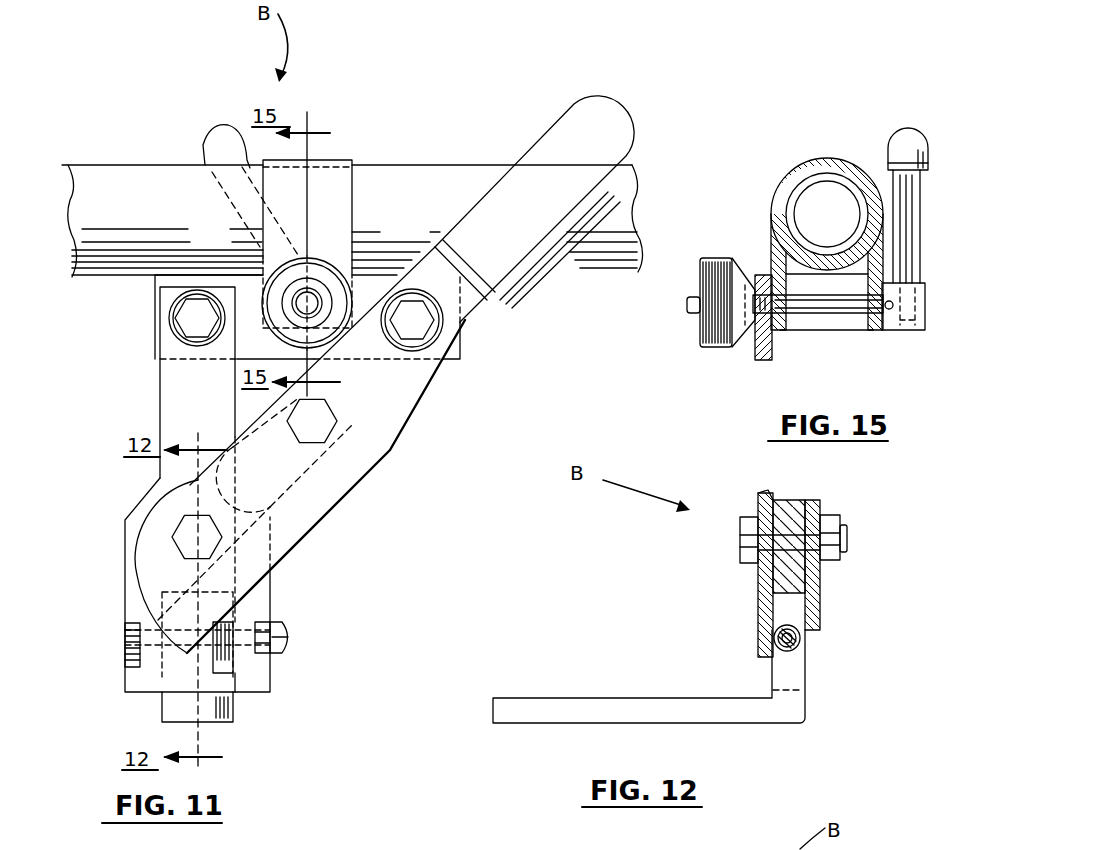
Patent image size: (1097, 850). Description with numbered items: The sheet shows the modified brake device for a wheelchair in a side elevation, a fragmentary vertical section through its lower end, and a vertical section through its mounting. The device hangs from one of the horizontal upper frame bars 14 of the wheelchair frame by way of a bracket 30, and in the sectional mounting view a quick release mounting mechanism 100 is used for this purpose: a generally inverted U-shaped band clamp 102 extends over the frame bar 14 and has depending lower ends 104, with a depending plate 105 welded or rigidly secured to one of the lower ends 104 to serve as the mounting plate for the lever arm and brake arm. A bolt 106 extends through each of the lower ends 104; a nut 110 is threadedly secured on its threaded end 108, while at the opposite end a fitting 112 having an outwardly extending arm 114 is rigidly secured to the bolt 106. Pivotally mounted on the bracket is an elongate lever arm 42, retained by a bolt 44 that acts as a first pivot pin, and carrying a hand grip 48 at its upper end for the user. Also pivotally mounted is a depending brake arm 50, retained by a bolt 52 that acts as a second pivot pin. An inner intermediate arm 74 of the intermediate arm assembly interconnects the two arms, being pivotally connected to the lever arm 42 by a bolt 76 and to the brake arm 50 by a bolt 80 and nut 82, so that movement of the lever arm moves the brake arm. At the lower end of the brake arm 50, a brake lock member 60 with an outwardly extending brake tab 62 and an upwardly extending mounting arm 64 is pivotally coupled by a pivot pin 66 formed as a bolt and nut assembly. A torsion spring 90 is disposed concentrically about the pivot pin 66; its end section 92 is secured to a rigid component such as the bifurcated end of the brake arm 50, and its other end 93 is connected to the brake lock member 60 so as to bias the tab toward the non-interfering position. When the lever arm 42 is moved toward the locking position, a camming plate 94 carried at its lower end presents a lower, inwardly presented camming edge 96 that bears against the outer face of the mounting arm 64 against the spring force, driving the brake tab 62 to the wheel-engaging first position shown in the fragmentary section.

In FIG. 11, the upper frame bar 14 is at (147, 176).
In FIG. 15, the upper frame bar 14 is at (826, 170).
In FIG. 11, the bracket 30 is at (352, 128).
In FIG. 11, the elongate lever arm 42 is at (382, 377).
In FIG. 11, the bolt 44 is at (417, 290).
In FIG. 11, the hand grip 48 is at (570, 135).
In FIG. 11, the brake arm 50 is at (185, 393).
In FIG. 12, the brake arm 50 is at (792, 577).
In FIG. 11, the bolt 52 is at (197, 306).
In FIG. 11, the brake lock member 60 is at (245, 703).
In FIG. 12, the brake lock member 60 is at (640, 672).
In FIG. 11, the brake tab 62 is at (233, 720).
In FIG. 12, the brake tab 62 is at (537, 703).
In FIG. 11, the mounting arm 64 is at (180, 683).
In FIG. 12, the mounting arm 64 is at (777, 667).
In FIG. 11, the pivot pin 66 is at (153, 637).
In FIG. 12, the pivot pin 66 is at (780, 635).
In FIG. 11, the inner intermediate arm 74 is at (152, 558).
In FIG. 12, the inner intermediate arm 74 is at (813, 607).
In FIG. 11, the bolt 76 is at (322, 423).
In FIG. 11, the bolt 80 is at (187, 523).
In FIG. 12, the bolt 80 is at (744, 539).
In FIG. 12, the nut 82 is at (827, 513).
In FIG. 11, the torsion spring 90 is at (230, 628).
In FIG. 12, the torsion spring 90 is at (797, 650).
In FIG. 11, the end section 92 is at (245, 665).
In FIG. 11, the spring end 93 is at (193, 660).
In FIG. 11, the camming plate 94 is at (330, 490).
In FIG. 12, the camming plate 94 is at (768, 503).
In FIG. 12, the camming edge 96 is at (777, 657).
In FIG. 15, the quick release mounting mechanism 100 is at (866, 108).
In FIG. 11, the band clamp 102 is at (338, 187).
In FIG. 15, the band clamp 102 is at (806, 167).
In FIG. 15, the lower ends 104 is at (860, 327).
In FIG. 11, the depending plate 105 is at (448, 349).
In FIG. 15, the depending plate 105 is at (760, 353).
In FIG. 11, the bolt 106 is at (312, 306).
In FIG. 15, the bolt 106 is at (813, 302).
In FIG. 15, the threaded end 108 is at (690, 312).
In FIG. 11, the nut 110 is at (320, 260).
In FIG. 15, the nut 110 is at (717, 254).
In FIG. 15, the fitting 112 is at (909, 322).
In FIG. 11, the outwardly extending arm 114 is at (215, 133).
In FIG. 15, the outwardly extending arm 114 is at (903, 138).